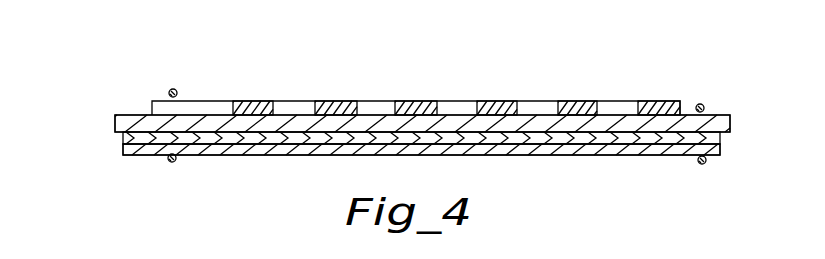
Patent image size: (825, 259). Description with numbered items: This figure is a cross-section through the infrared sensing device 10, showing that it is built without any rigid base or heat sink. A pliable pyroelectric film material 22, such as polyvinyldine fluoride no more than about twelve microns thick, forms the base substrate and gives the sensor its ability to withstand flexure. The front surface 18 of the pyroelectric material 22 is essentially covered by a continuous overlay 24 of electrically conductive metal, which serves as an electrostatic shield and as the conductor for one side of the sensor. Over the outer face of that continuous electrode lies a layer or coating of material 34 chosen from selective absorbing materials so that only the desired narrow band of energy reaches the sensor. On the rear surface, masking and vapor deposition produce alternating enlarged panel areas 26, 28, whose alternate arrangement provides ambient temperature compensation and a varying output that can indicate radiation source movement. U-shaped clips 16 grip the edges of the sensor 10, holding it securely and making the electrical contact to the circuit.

The infrared sensing device 10 is at (718, 114).
The clips 16 is at (170, 90).
The surface 18 is at (568, 156).
The pliable pyroelectric film material 22 is at (128, 121).
The continuous overlay 24 is at (762, 183).
The enlarged panel areas 26 is at (340, 100).
The enlarged panel areas 28 is at (247, 100).
The layer or coating of material 34 is at (152, 148).